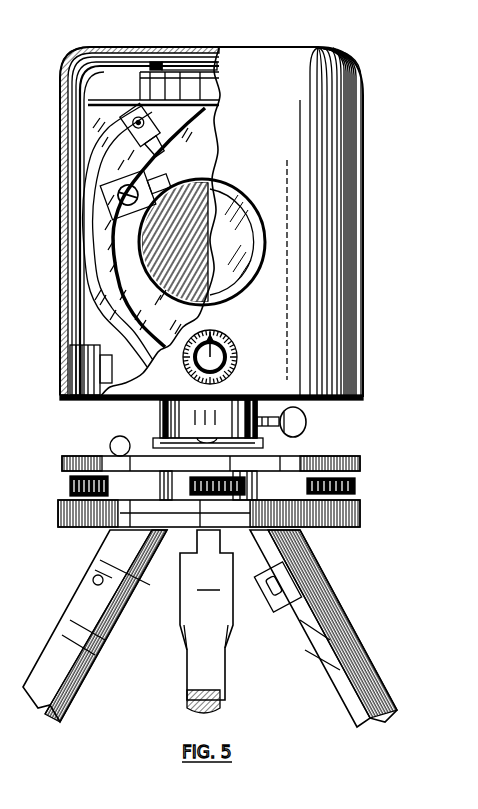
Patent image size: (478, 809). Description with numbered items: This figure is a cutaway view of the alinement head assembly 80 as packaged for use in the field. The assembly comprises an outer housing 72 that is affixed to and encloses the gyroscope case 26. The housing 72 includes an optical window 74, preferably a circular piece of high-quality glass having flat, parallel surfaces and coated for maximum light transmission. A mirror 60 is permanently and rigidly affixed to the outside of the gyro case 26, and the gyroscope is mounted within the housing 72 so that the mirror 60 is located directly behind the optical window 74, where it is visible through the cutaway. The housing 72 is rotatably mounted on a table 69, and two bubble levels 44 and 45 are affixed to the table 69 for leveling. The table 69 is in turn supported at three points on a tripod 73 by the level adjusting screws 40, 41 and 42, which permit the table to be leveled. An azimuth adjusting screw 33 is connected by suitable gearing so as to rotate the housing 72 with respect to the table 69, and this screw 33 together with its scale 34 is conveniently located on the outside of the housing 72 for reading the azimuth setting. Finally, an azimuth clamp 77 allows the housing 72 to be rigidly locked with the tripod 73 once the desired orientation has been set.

The gyroscope case 26 is at (105, 137).
The azimuth adjusting screw 33 is at (217, 343).
The scale 34 is at (240, 358).
The level adjusting screw 40 is at (66, 483).
The level adjusting screw 41 is at (258, 484).
The level adjusting screw 42 is at (358, 484).
The bubble level 44 is at (118, 438).
The bubble level 45 is at (263, 442).
The mirror 60 is at (163, 248).
The table 69 is at (358, 460).
The outer housing 72 is at (261, 62).
The tripod 73 is at (352, 528).
The optical window 74 is at (237, 212).
The azimuth clamp 77 is at (294, 423).
The alinement head assembly 80 is at (318, 47).